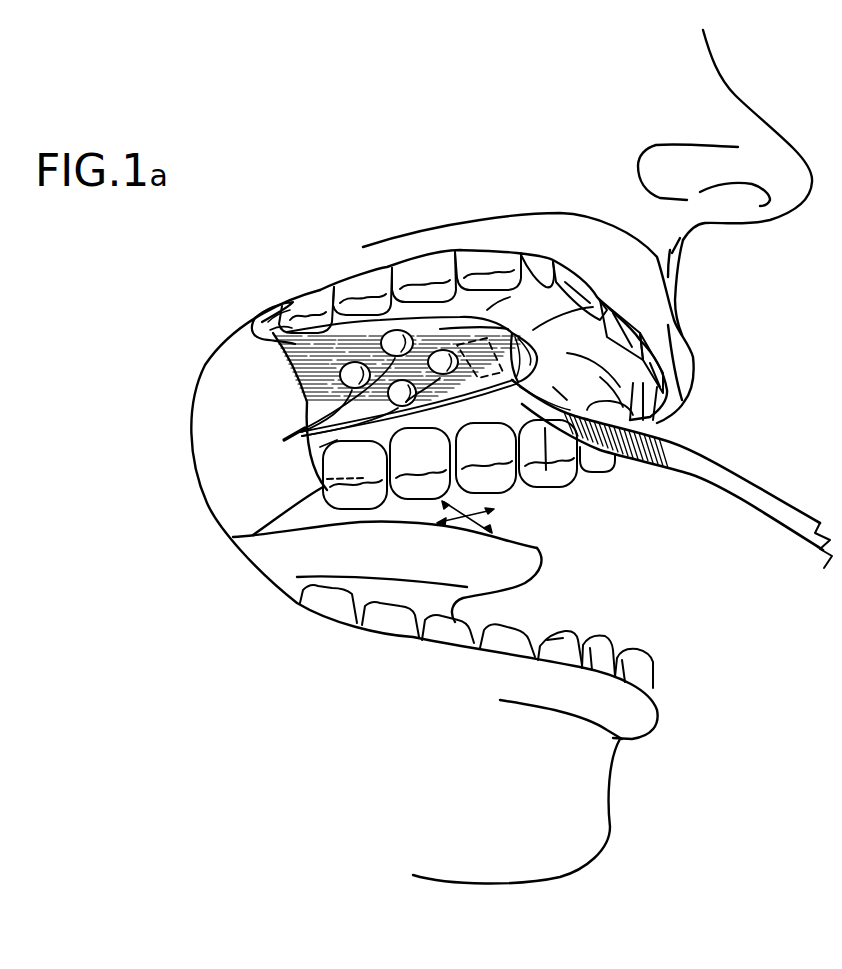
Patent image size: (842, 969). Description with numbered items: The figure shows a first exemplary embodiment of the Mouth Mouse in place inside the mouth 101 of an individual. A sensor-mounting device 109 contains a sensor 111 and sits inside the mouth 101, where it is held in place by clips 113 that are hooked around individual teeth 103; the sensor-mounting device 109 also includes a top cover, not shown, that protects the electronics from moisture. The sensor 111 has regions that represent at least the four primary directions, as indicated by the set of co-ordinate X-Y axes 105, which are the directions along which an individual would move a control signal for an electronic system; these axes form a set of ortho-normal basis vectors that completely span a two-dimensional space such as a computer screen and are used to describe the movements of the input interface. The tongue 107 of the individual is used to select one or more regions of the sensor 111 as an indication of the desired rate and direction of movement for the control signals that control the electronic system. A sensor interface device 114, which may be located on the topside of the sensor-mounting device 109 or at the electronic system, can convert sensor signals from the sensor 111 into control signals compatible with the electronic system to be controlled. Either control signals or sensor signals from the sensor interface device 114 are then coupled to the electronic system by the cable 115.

The mouth 101 is at (662, 559).
The teeth 103 is at (325, 300).
The set of co-ordinate X-Y axes 105 is at (517, 552).
The tongue 107 is at (537, 548).
The sensor-mounting device 109 is at (298, 366).
The sensor 111 is at (307, 425).
The clips 113 is at (263, 314).
The sensor interface device 114 is at (482, 383).
The cable 115 is at (703, 448).